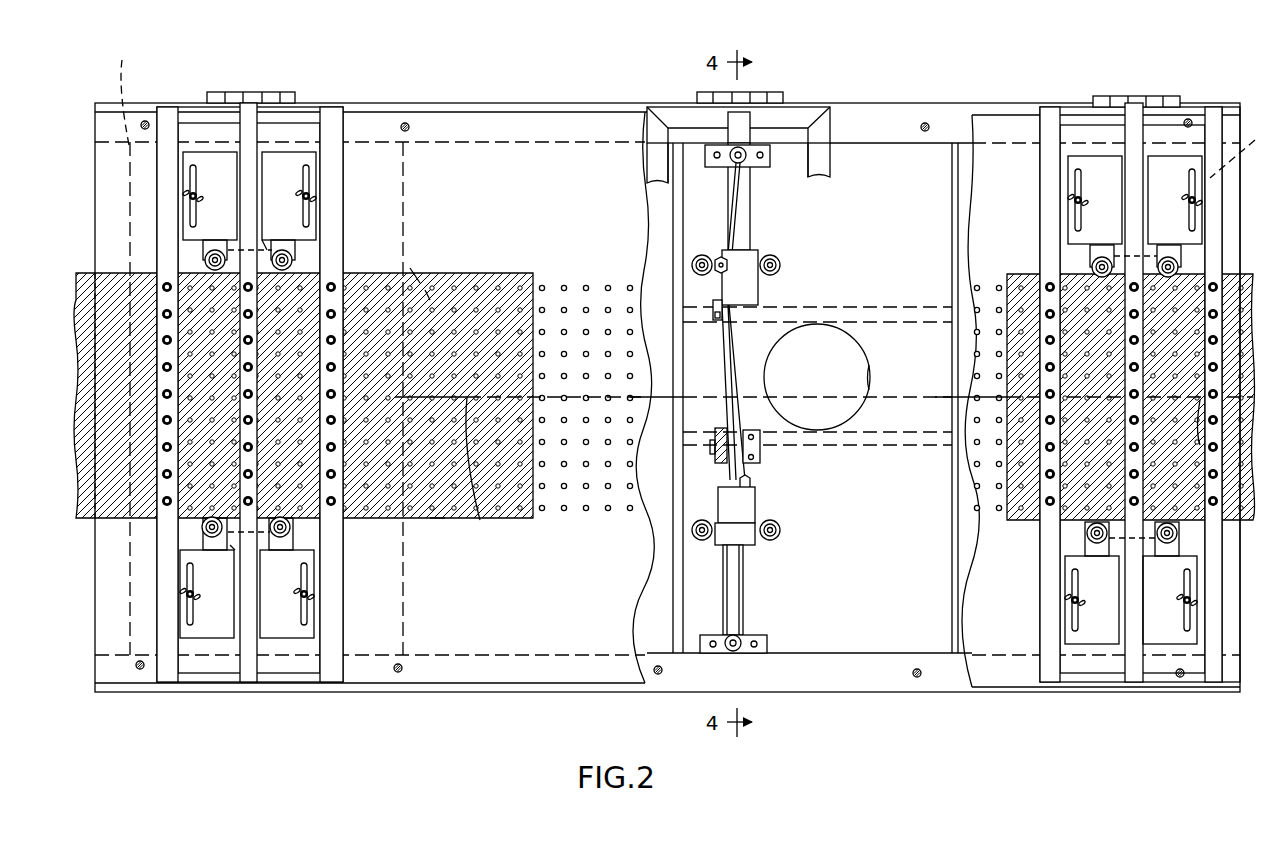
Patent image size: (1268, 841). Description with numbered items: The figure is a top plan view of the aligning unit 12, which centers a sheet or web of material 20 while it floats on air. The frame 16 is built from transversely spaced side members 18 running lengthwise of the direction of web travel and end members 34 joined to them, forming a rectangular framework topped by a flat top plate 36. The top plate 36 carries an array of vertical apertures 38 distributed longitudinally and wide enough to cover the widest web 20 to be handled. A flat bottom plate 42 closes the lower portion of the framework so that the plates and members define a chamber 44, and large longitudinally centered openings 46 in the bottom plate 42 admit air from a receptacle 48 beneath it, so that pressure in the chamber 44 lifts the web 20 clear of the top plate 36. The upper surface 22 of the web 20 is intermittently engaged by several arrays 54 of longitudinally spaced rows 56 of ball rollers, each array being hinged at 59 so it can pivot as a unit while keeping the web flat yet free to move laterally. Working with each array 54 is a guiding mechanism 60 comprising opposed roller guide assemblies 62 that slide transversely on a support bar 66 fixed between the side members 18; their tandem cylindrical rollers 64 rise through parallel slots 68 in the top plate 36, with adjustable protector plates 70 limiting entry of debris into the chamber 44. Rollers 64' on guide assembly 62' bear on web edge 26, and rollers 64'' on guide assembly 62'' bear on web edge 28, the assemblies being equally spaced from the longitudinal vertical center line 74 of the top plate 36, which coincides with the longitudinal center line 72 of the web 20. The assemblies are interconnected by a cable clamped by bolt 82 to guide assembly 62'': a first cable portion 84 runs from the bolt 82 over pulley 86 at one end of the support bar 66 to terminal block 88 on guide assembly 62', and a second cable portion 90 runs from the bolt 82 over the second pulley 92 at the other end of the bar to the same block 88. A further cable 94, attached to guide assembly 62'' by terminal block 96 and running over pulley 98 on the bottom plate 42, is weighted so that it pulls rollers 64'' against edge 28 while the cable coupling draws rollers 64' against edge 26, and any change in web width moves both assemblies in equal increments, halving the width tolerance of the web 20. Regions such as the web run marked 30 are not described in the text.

The aligning unit 12 is at (490, 715).
The frame 16 is at (495, 100).
The side members 18 is at (908, 125).
The web of material 20 is at (485, 300).
The upper surface 22 is at (425, 295).
The web edge 26 is at (437, 520).
The web edge 28 is at (415, 275).
The belt run 30 is at (115, 283).
The end members 34 is at (681, 115).
The top plate 36 is at (523, 580).
The vertical apertures 38 is at (607, 283).
The bottom plate 42 is at (912, 625).
The chamber 44 is at (842, 547).
The openings 46 is at (868, 380).
The receptacle 48 is at (802, 380).
The arrays of ball rollers 54 is at (193, 103).
The rows of ball rollers 56 is at (168, 208).
The hinge 59 is at (255, 92).
The guiding mechanism 60 is at (757, 583).
The roller guide assembly 62 is at (247, 392).
The roller guide assembly 62' is at (771, 516).
The roller guide assembly 62'' is at (775, 277).
The cylindrical rollers 64 is at (735, 397).
The cylindrical rollers 64' is at (742, 556).
The cylindrical rollers 64'' is at (729, 240).
The support bar 66 is at (750, 225).
The slots 68 is at (293, 248).
The protector plates 70 is at (290, 163).
The longitudinal center line 72 is at (834, 473).
The longitudinal vertical center line 74 is at (648, 397).
The bolt 82 is at (718, 260).
The first cable portion 84 is at (750, 182).
The pulley 86 is at (735, 158).
The terminal block 88 is at (752, 487).
The second cable portion 90 is at (723, 585).
The second pulley 92 is at (728, 652).
The cable 94 is at (718, 357).
The terminal block 96 is at (714, 316).
The pulley 98 is at (713, 456).